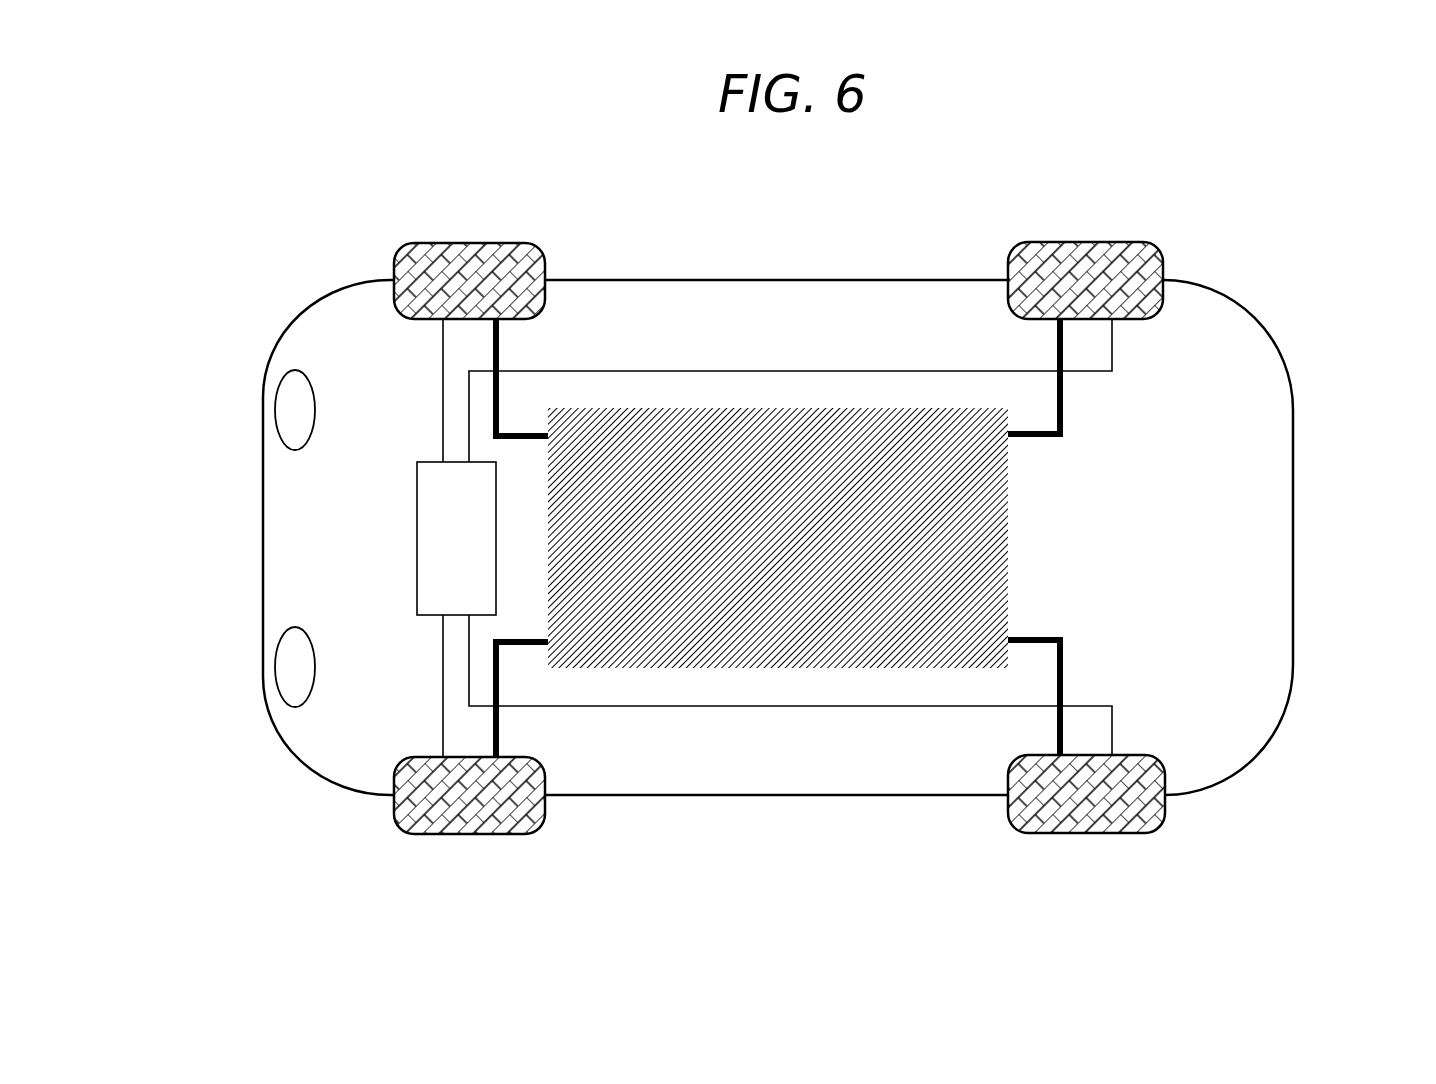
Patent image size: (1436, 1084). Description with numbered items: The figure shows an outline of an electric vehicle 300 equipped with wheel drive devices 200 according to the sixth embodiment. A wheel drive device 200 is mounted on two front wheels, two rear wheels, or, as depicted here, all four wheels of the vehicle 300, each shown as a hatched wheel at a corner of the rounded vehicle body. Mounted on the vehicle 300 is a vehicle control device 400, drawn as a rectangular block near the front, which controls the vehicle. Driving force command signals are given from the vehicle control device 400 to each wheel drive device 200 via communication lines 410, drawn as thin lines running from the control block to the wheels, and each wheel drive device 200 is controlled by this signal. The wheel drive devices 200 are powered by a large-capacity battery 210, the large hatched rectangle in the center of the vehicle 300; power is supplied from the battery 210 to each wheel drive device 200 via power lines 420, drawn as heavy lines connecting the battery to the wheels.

The wheel drive device 200 is at (472, 243).
The battery 210 is at (647, 650).
The vehicle 300 is at (302, 322).
The vehicle control device 400 is at (432, 547).
The communication line 410 is at (725, 371).
The power line 420 is at (497, 363).